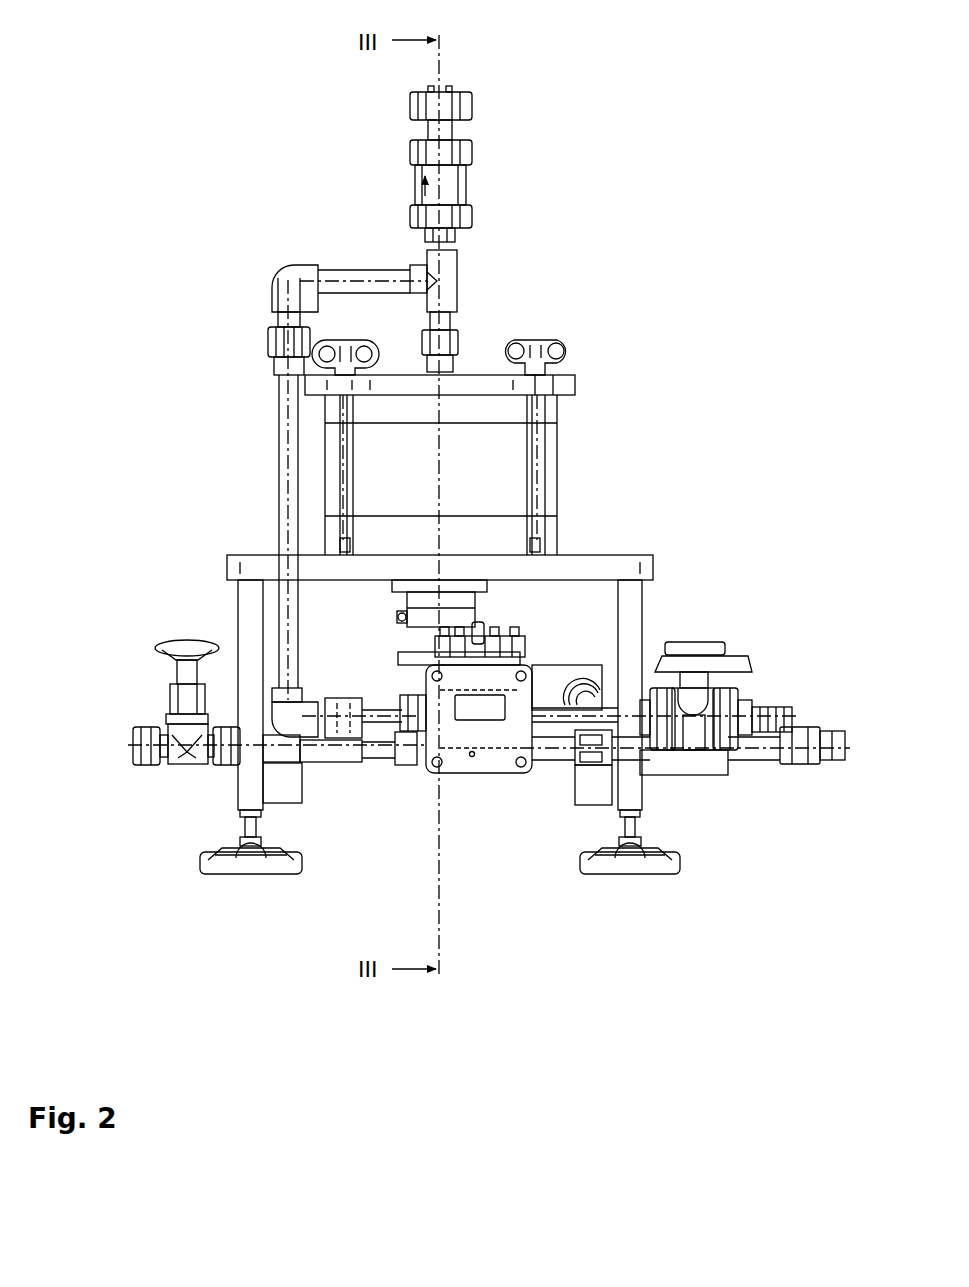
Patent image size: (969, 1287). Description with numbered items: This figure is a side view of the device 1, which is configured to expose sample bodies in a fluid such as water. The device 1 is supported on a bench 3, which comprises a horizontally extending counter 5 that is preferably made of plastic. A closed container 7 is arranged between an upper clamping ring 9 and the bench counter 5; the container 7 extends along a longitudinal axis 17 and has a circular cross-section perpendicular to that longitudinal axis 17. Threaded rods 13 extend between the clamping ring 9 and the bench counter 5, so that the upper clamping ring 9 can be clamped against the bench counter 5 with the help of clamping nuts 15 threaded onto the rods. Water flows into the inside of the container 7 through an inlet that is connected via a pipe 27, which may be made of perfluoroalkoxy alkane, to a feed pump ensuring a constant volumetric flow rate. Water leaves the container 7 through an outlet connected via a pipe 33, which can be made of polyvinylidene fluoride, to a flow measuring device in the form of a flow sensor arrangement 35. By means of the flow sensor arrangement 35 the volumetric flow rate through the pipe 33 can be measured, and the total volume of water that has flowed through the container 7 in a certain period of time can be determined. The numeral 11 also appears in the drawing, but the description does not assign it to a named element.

The device 1 is at (250, 242).
The bench 3 is at (675, 575).
The counter 5 is at (606, 562).
The closed container 7 is at (577, 468).
The upper clamping ring 9 is at (535, 450).
The guide post 11 is at (342, 468).
The threaded rods 13 is at (578, 378).
The clamping nuts 15 is at (322, 335).
The longitudinal axis 17 is at (462, 338).
The pipe 27 is at (800, 722).
The pipe 33 is at (278, 478).
The flow sensor arrangement 35 is at (473, 758).